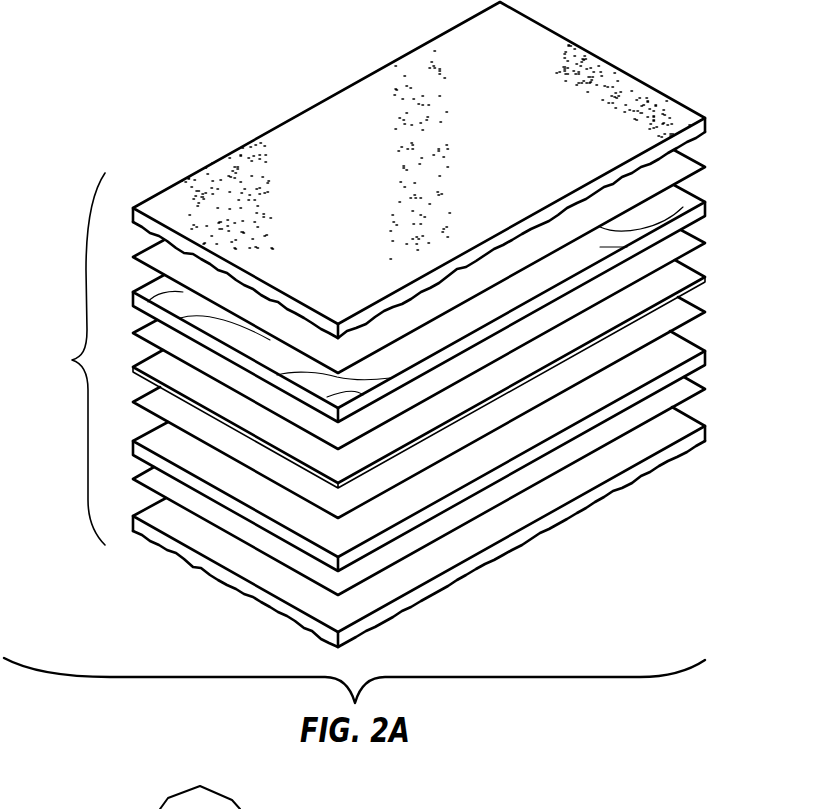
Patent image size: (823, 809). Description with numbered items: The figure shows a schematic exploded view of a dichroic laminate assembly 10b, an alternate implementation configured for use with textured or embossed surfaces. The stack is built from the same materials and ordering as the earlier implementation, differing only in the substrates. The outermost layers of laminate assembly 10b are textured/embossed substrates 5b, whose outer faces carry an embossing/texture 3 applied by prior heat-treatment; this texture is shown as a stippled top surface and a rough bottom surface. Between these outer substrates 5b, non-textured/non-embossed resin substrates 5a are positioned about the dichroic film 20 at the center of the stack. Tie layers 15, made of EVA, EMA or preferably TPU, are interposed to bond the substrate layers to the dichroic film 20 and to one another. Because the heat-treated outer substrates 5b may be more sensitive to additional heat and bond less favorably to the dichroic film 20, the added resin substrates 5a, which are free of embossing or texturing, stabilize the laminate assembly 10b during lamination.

The embossing/texture 3 is at (240, 180).
The non-textured resin substrate 5a is at (678, 208).
The textured/embossed substrate 5b is at (680, 132).
The laminate assembly 10b is at (72, 360).
The tie layer 15 is at (660, 180).
The dichroic film 20 is at (607, 317).